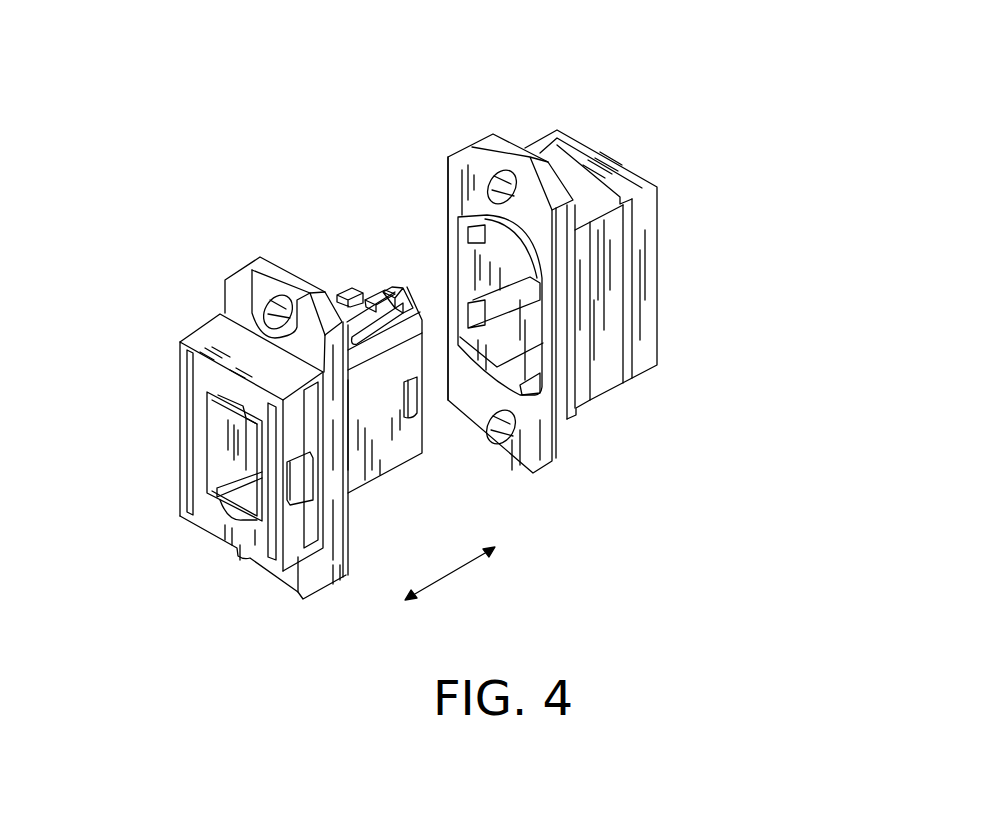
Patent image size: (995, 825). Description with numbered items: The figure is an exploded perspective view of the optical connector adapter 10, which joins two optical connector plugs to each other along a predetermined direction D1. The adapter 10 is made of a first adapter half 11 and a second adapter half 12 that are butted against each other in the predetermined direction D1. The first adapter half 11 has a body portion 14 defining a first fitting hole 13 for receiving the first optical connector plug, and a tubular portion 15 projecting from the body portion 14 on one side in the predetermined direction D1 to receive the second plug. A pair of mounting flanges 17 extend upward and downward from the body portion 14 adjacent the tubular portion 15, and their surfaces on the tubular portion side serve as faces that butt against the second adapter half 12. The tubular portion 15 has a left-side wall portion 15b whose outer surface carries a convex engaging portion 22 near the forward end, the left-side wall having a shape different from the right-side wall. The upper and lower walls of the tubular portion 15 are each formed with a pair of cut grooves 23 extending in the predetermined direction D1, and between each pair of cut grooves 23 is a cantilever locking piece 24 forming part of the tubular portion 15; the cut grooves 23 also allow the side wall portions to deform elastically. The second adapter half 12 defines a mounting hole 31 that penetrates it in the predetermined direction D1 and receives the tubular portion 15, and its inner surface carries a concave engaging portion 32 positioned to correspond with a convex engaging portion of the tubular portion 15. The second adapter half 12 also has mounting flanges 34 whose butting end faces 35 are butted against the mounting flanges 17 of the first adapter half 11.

The optical connector adapter 10 is at (494, 49).
The first adapter half 11 is at (318, 603).
The second adapter half 12 is at (648, 382).
The first fitting hole 13 is at (222, 457).
The body portion 14 is at (210, 520).
The tubular portion 15 is at (378, 472).
The left-side wall portion 15b is at (393, 413).
The mounting flanges 17 is at (276, 275).
The engaging portion 22 is at (416, 407).
The cut grooves 23 is at (345, 292).
The cantilever locking piece 24 is at (385, 300).
The mounting hole 31 is at (521, 365).
The engaging portion 32 is at (535, 270).
The mounting flanges 34 is at (486, 132).
The butting end faces 35 is at (450, 154).
The predetermined direction D1 is at (453, 575).